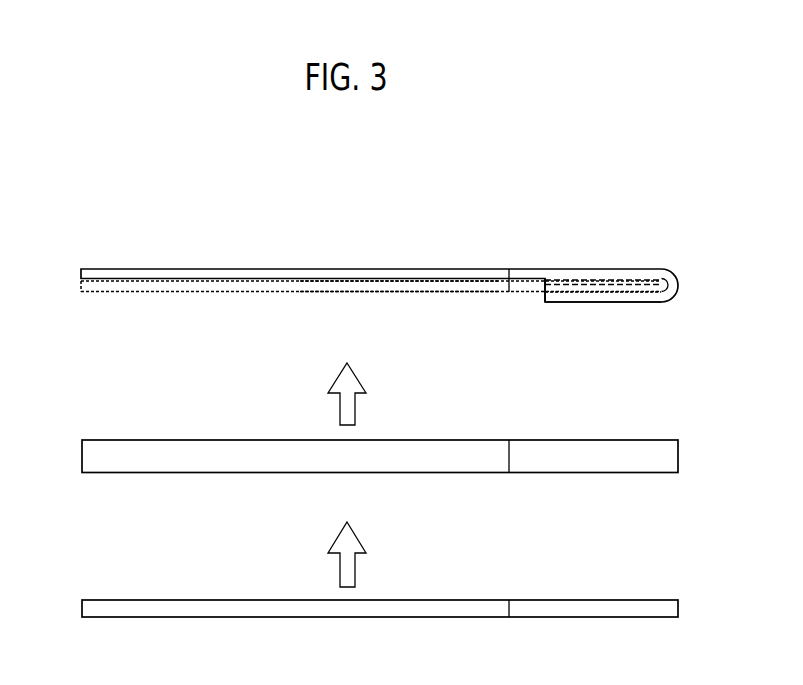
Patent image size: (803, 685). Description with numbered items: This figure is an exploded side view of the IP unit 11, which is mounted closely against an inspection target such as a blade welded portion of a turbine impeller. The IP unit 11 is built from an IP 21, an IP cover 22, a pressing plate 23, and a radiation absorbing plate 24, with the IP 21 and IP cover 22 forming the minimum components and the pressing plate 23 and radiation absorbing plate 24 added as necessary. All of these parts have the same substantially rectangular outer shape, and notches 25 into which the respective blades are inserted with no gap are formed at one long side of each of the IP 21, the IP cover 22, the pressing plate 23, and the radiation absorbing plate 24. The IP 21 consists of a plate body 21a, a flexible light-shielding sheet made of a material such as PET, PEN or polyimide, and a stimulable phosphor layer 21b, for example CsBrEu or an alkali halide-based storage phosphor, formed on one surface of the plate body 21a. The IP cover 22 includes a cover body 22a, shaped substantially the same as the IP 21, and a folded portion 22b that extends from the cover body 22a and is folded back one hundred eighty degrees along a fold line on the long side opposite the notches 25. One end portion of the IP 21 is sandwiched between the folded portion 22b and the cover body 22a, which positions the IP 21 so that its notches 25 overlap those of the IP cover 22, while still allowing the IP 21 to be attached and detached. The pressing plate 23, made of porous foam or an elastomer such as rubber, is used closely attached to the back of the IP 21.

The IP unit 11 is at (184, 247).
The IP 21 is at (256, 293).
The plate body 21a is at (430, 291).
The stimulable phosphor layer 21b is at (395, 283).
The IP cover 22 is at (215, 268).
The cover body 22a is at (549, 278).
The folded portion 22b is at (578, 297).
The pressing plate 23 is at (427, 440).
The radiation absorbing plate 24 is at (427, 600).
The notches 25 is at (508, 278).